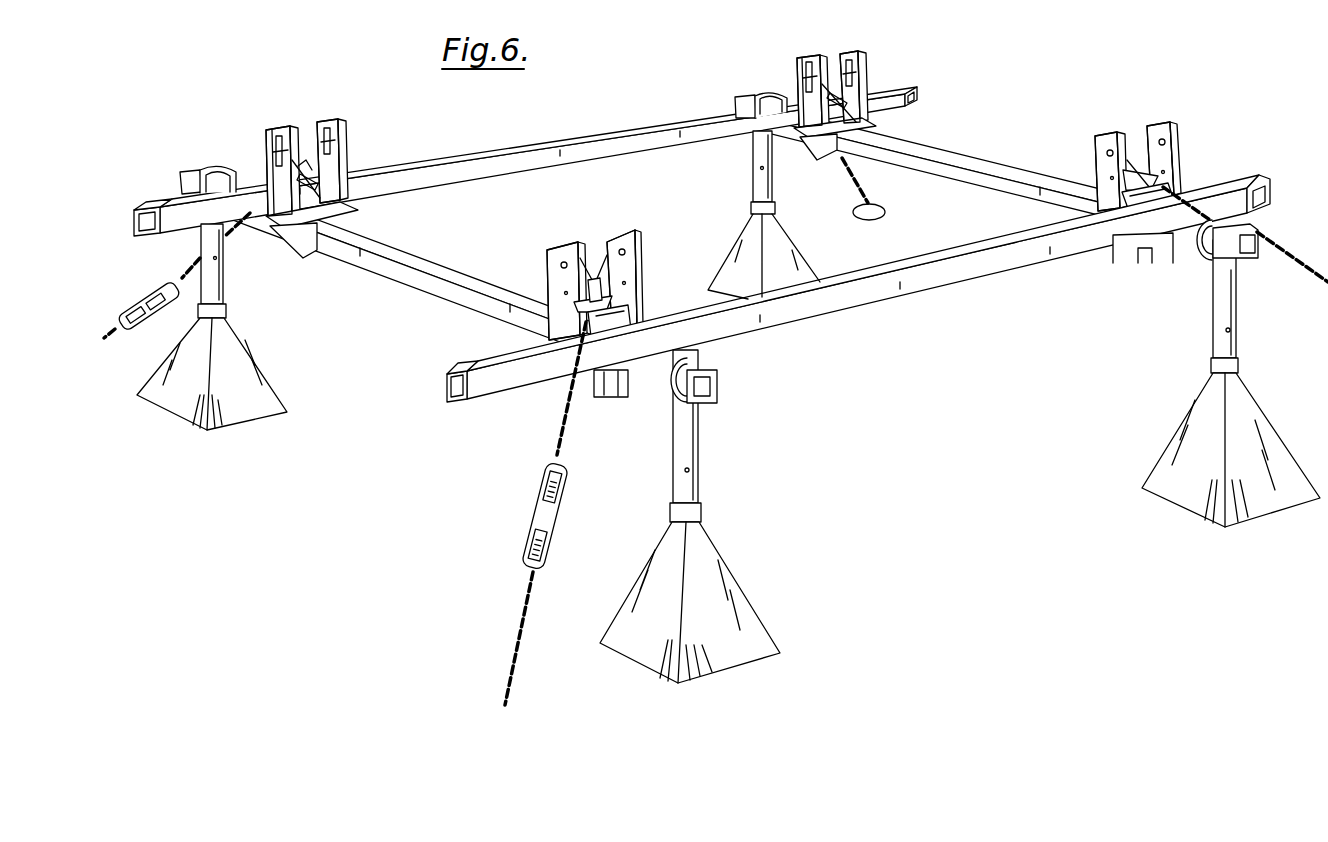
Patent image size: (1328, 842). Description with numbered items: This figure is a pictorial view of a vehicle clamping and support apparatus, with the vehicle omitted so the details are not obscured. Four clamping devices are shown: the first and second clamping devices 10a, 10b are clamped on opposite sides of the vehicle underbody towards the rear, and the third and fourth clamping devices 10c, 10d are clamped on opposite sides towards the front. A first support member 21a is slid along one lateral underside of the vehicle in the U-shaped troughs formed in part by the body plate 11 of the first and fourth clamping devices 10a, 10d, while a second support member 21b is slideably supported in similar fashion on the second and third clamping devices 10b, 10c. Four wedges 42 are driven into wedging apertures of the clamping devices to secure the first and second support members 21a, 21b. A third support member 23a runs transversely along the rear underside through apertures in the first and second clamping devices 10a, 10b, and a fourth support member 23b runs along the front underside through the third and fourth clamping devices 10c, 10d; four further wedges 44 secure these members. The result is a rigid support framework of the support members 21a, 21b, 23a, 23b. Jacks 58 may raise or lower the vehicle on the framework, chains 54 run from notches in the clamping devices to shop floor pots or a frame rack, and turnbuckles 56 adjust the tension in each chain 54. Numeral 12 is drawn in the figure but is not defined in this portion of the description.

The first clamping device 10a is at (868, 77).
The second clamping device 10b is at (1177, 134).
The third clamping device 10c is at (639, 247).
The fourth clamping device 10d is at (358, 136).
The body plate 11 is at (266, 156).
The base plate 12 is at (350, 214).
The first support member 21a is at (551, 142).
The second support member 21b is at (894, 290).
The third support member 23a is at (996, 170).
The fourth support member 23b is at (397, 274).
The wedge 42 is at (626, 311).
The wedge 44 is at (620, 398).
The chain 54 is at (198, 262).
The turnbuckle 56 is at (150, 283).
The jack 58 is at (228, 272).